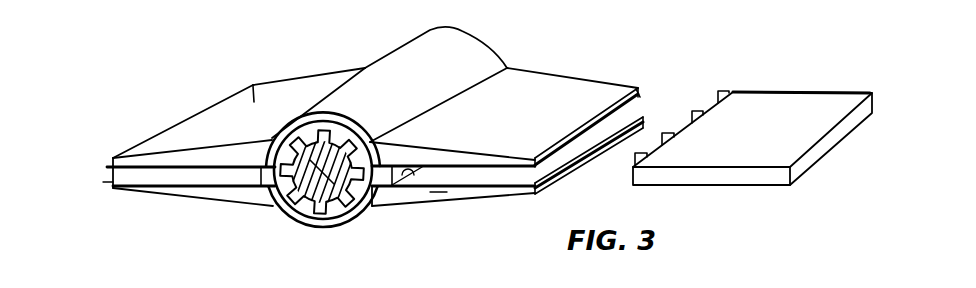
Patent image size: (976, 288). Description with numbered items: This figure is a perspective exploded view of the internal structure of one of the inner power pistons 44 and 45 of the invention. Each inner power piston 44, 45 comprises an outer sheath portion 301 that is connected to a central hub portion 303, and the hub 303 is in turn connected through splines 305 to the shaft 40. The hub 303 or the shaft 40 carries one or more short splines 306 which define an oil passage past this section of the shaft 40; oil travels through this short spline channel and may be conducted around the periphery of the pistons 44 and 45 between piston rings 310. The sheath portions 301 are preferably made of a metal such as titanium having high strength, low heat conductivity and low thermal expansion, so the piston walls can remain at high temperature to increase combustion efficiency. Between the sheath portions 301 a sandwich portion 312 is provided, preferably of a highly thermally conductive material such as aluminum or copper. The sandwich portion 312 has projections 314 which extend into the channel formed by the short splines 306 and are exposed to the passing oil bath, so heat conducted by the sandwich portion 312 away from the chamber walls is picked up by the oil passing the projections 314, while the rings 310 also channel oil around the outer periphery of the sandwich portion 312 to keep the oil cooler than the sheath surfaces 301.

The shaft 40 is at (301, 195).
The inner power piston 44 is at (553, 88).
The inner power piston 45 is at (253, 85).
The outer sheath portion 301 is at (190, 99).
The central hub portion 303 is at (337, 130).
The splines 305 is at (446, 194).
The short splines 306 is at (290, 176).
The piston rings 310 is at (632, 96).
The sandwich portion 312 is at (755, 110).
The projections 314 is at (690, 112).